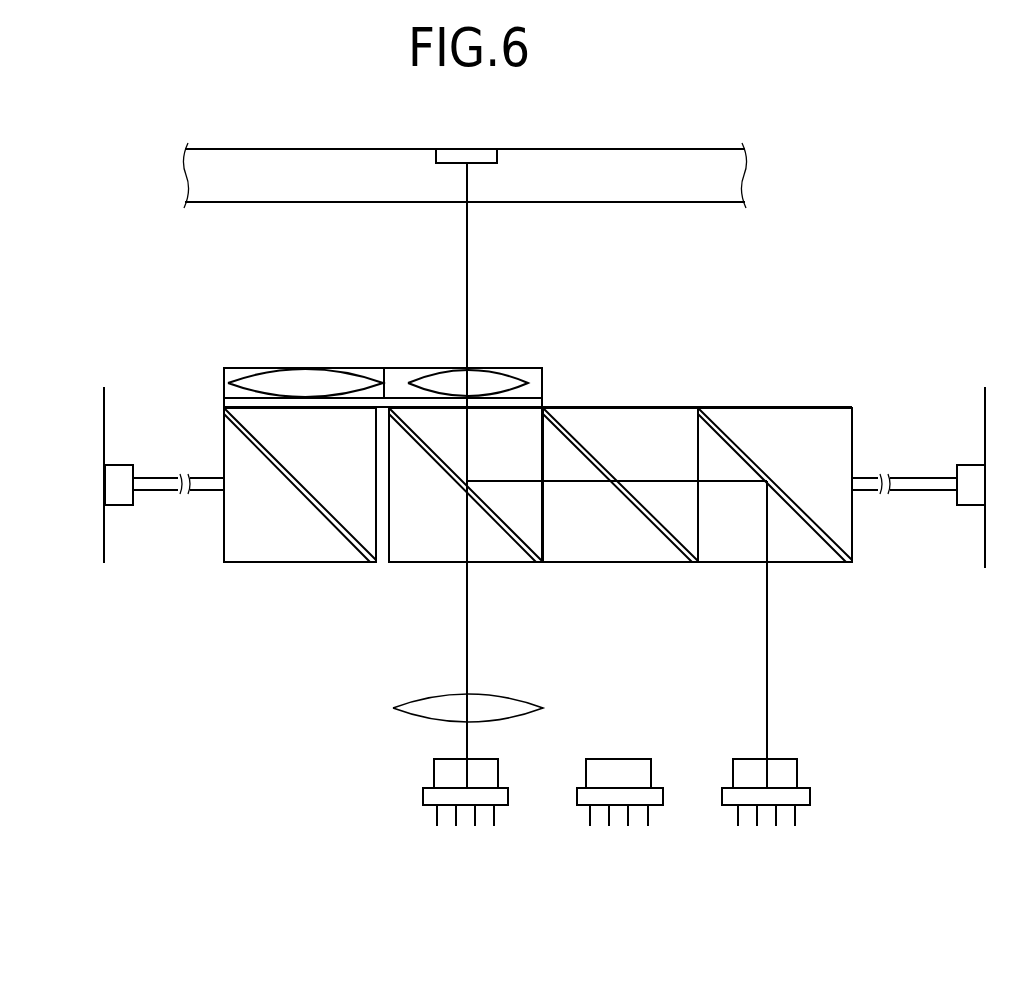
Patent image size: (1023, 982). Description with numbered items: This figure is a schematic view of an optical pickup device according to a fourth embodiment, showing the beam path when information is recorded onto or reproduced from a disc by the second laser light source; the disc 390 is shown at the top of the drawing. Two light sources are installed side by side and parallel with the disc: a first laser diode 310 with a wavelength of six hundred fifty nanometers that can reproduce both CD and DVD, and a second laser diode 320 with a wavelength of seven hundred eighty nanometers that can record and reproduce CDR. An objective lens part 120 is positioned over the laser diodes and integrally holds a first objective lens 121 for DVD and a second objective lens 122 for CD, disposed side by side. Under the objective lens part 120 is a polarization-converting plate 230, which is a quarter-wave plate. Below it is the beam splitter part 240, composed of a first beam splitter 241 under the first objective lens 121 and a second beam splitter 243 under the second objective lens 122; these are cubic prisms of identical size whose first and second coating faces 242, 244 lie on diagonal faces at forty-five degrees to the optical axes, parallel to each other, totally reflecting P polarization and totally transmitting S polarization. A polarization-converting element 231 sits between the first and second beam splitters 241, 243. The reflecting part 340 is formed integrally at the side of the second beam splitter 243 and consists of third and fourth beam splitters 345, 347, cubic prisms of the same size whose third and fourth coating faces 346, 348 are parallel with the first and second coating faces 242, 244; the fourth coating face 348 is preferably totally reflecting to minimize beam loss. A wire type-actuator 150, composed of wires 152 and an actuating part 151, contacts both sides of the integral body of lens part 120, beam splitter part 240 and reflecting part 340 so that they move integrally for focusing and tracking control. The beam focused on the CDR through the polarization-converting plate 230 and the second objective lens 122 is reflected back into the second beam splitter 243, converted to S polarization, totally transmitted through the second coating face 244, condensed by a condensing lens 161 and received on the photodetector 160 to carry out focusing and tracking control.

The disc/recording medium 390 is at (748, 162).
The objective lens part 120 is at (530, 383).
The first objective lens 121 is at (308, 372).
The second objective lens 122 is at (478, 375).
The polarization-converting plate 230 is at (543, 407).
The beam splitter part 240 is at (383, 553).
The first beam splitter 241 is at (290, 550).
The first coating face 242 is at (308, 490).
The gap/plate 231 is at (383, 552).
The second beam splitter 243 is at (440, 548).
The second coating face 244 is at (458, 474).
The reflecting part 340 is at (697, 553).
The third beam splitter 345 is at (614, 552).
The third coating face 346 is at (610, 475).
The fourth beam splitter 347 is at (740, 552).
The fourth coating face 348 is at (763, 475).
The wire type-actuator 150 is at (120, 545).
The actuating part 151 is at (105, 410).
The wires 152 is at (156, 494).
The condensing lens 161 is at (396, 708).
The photodetector 160 is at (425, 799).
The first laser diode 310 is at (655, 800).
The second laser diode 320 is at (805, 800).